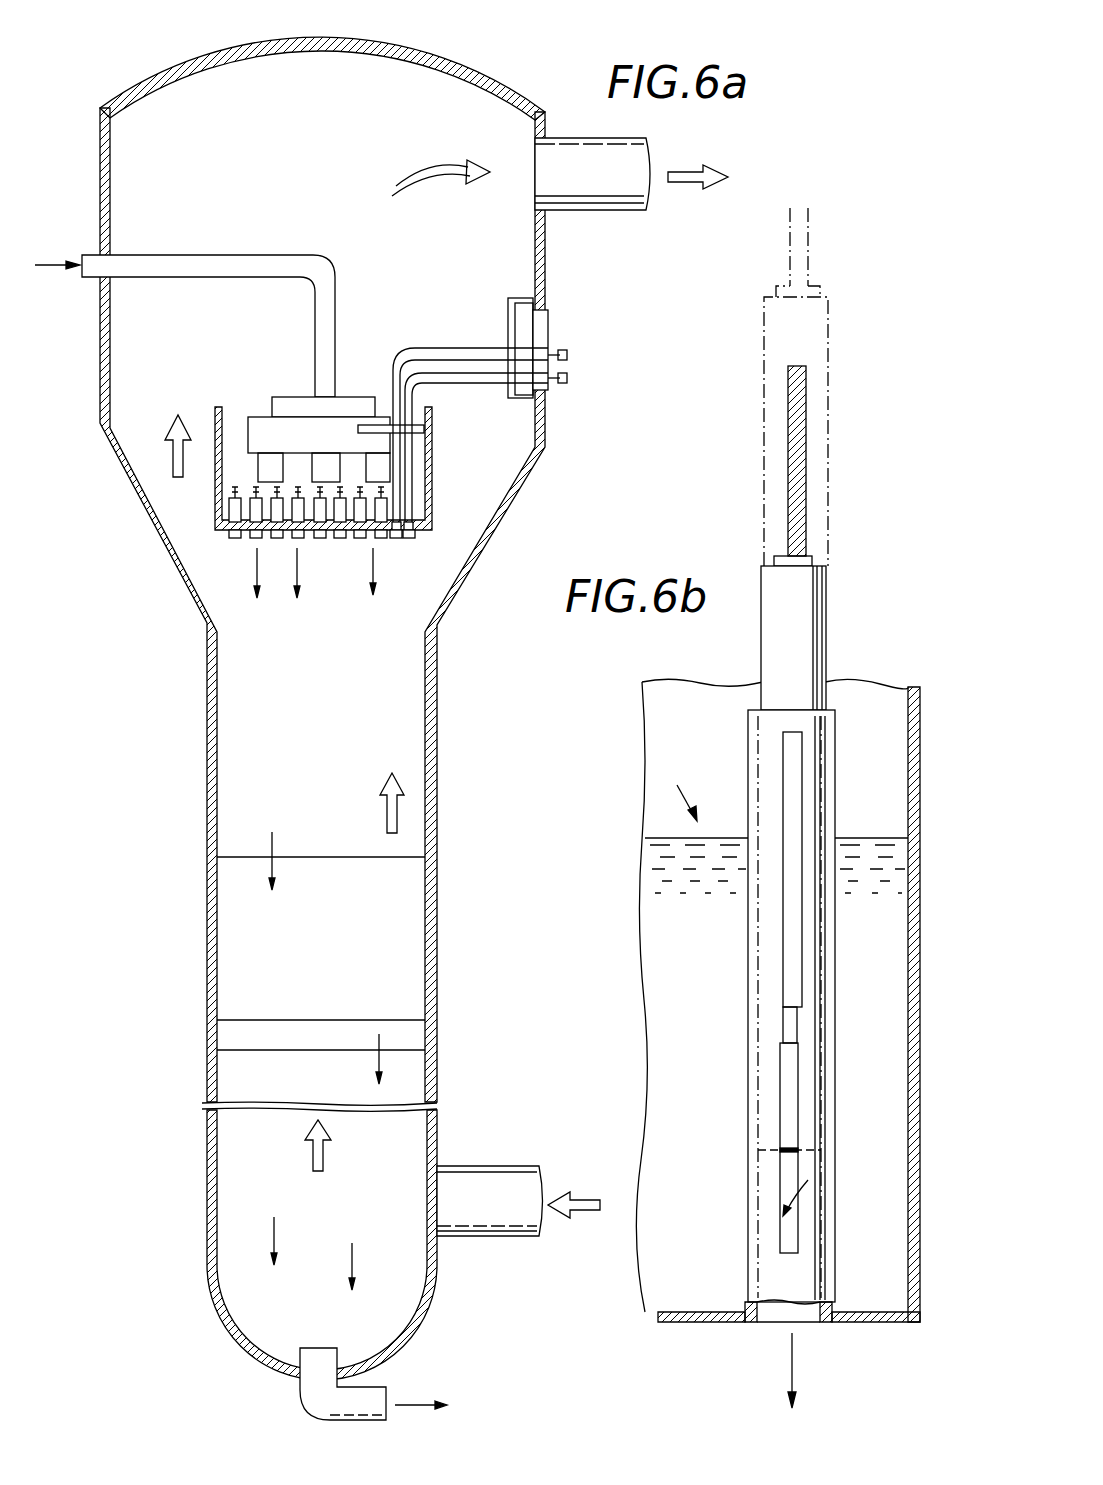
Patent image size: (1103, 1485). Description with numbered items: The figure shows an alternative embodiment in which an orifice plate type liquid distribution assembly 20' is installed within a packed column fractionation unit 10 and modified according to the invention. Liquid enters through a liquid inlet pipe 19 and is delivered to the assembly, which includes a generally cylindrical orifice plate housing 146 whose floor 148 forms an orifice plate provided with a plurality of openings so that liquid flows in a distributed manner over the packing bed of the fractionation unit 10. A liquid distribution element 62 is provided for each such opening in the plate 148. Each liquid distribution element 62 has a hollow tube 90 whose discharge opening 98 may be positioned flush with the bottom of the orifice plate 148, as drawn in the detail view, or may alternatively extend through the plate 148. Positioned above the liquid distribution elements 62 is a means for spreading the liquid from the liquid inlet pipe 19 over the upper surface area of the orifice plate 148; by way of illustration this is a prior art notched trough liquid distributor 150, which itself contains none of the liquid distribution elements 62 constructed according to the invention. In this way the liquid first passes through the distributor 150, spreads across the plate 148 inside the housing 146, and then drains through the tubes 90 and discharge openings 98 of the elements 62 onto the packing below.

In FIG. 6a, the fractionation unit 10 is at (200, 758).
In FIG. 6a, the liquid inlet pipe 19 is at (234, 262).
In FIG. 6a, the liquid distribution assembly 20' is at (381, 468).
In FIG. 6b, the liquid distribution assembly 20' is at (722, 808).
In FIG. 6a, the liquid distribution element 62 is at (397, 507).
In FIG. 6b, the liquid distribution element 62 is at (832, 627).
In FIG. 6b, the hollow tube 90 is at (748, 1104).
In FIG. 6b, the discharge opening 98 is at (785, 1322).
In FIG. 6a, the orifice plate housing 146 is at (215, 412).
In FIG. 6b, the orifice plate housing 146 is at (662, 738).
In FIG. 6a, the orifice plate 148 is at (342, 524).
In FIG. 6b, the orifice plate 148 is at (690, 1312).
In FIG. 6a, the notched trough liquid distributor 150 is at (300, 403).